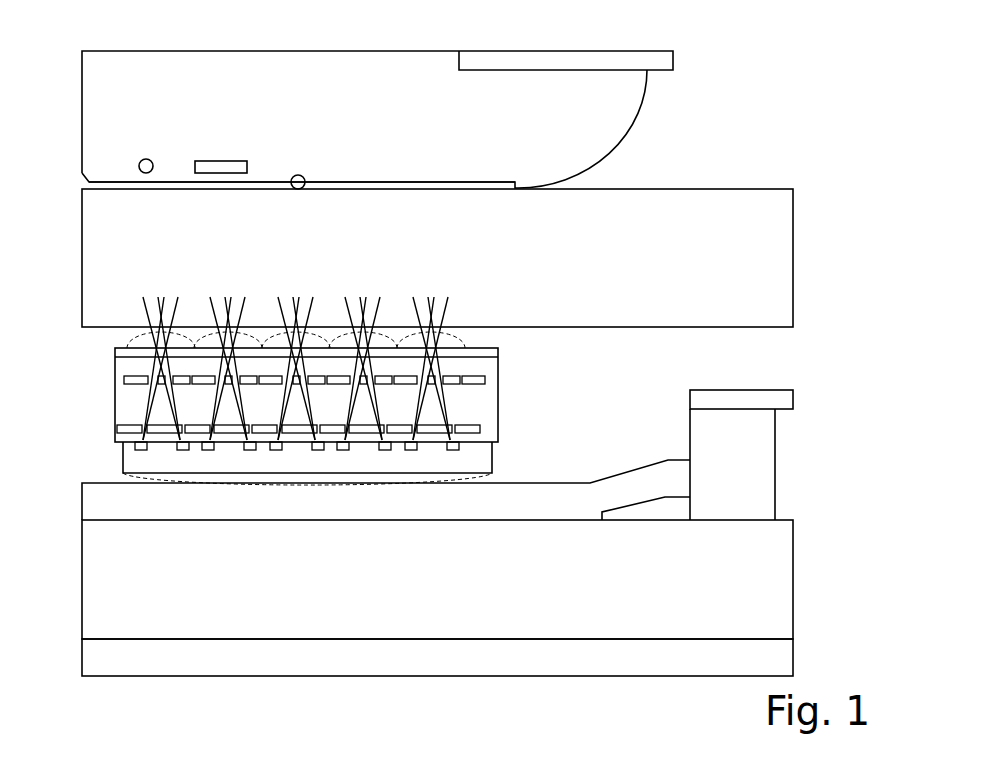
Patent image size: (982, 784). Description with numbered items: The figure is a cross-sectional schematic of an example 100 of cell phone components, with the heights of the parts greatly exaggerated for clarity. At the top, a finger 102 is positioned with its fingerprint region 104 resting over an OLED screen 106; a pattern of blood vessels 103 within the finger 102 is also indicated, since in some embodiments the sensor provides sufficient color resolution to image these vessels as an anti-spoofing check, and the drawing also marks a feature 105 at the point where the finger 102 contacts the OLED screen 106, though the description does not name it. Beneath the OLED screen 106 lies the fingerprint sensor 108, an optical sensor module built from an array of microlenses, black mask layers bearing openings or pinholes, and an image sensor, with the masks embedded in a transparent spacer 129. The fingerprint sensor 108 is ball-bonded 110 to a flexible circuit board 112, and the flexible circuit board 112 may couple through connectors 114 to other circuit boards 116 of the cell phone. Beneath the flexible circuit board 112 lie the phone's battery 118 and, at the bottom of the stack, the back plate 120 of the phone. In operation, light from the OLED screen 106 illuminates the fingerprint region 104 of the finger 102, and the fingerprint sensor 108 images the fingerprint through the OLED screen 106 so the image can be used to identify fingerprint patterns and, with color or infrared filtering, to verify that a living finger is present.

The example 100 is at (705, 42).
The finger 102 is at (377, 119).
The blood vessels 103 is at (152, 162).
The fingerprint region 104 is at (474, 182).
The contact point of finger on display 105 is at (304, 178).
The OLED screen 106 is at (437, 258).
The fingerprint sensor 108 is at (100, 476).
The ball bond 110 is at (447, 475).
The flexible circuit board 112 is at (140, 493).
The connectors 114 is at (732, 464).
The other circuit boards 116 is at (708, 390).
The battery 118 is at (437, 579).
The back plate 120 is at (437, 657).
The transparent spacer 129 is at (298, 409).